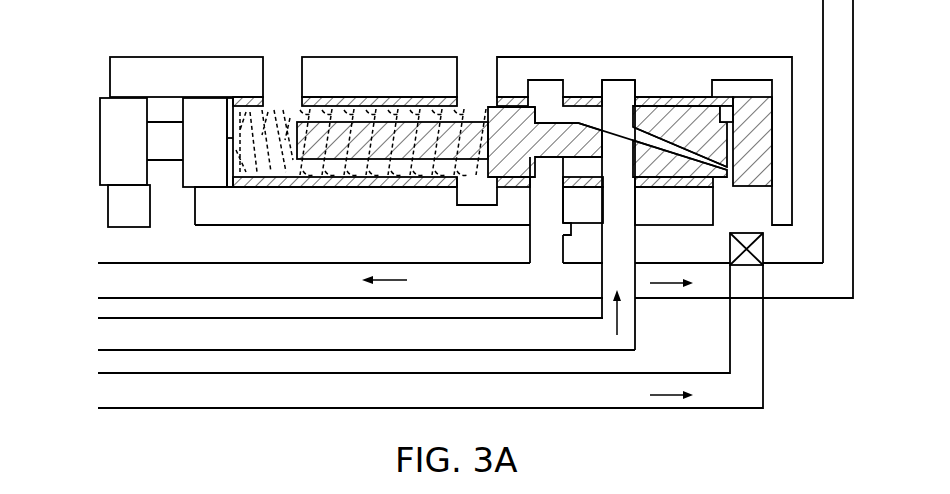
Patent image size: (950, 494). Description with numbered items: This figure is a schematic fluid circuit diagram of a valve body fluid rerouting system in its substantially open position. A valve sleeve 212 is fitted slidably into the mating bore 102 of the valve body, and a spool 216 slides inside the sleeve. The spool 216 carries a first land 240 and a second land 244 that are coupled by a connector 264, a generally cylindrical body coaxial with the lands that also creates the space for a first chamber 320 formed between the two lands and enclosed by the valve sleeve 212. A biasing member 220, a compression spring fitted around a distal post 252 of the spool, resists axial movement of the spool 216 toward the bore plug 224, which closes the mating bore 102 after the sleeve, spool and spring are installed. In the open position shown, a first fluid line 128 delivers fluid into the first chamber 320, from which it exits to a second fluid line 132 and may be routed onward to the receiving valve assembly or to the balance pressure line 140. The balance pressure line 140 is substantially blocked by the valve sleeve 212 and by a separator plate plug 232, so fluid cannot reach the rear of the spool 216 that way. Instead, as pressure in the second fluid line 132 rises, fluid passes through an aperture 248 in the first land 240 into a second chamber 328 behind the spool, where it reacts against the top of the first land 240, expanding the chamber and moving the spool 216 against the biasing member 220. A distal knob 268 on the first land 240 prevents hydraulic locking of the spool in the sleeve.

The mating bore 102 is at (755, 67).
The first fluid line 128 is at (420, 345).
The second fluid line 132 is at (256, 293).
The balance pressure line 140 is at (567, 403).
The valve sleeve 212 is at (750, 197).
The spool 216 is at (657, 180).
The biasing member 220 is at (281, 109).
The bore plug 224 is at (110, 140).
The separator plate plug 232 is at (752, 250).
The first land 240 is at (662, 97).
The second land 244 is at (511, 121).
The aperture 248 is at (607, 127).
The distal post 252 is at (400, 127).
The connector 264 is at (553, 162).
The distal knob 268 is at (735, 136).
The first chamber 320 is at (571, 105).
The second chamber 328 is at (731, 104).